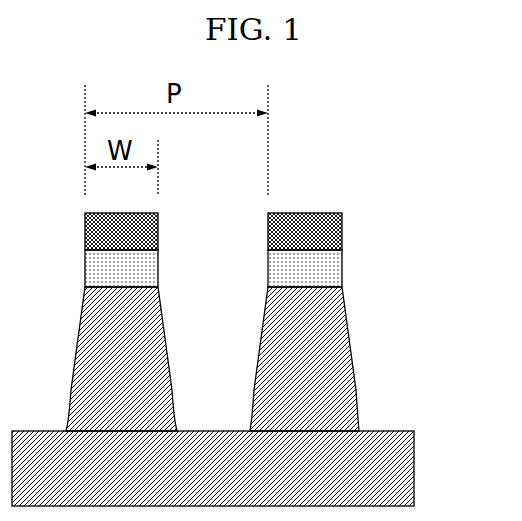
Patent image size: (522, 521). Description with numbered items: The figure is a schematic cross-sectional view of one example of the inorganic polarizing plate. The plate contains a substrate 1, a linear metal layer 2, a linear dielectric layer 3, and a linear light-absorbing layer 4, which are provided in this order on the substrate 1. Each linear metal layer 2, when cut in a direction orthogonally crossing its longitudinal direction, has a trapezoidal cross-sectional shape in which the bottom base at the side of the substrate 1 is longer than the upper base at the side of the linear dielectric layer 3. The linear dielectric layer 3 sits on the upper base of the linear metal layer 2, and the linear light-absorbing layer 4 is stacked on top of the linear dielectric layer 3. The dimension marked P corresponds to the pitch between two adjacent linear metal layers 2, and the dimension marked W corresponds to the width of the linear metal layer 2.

The substrate 1 is at (385, 470).
The linear metal layer 2 is at (325, 378).
The linear dielectric layer 3 is at (325, 265).
The linear light-absorbing layer 4 is at (322, 230).